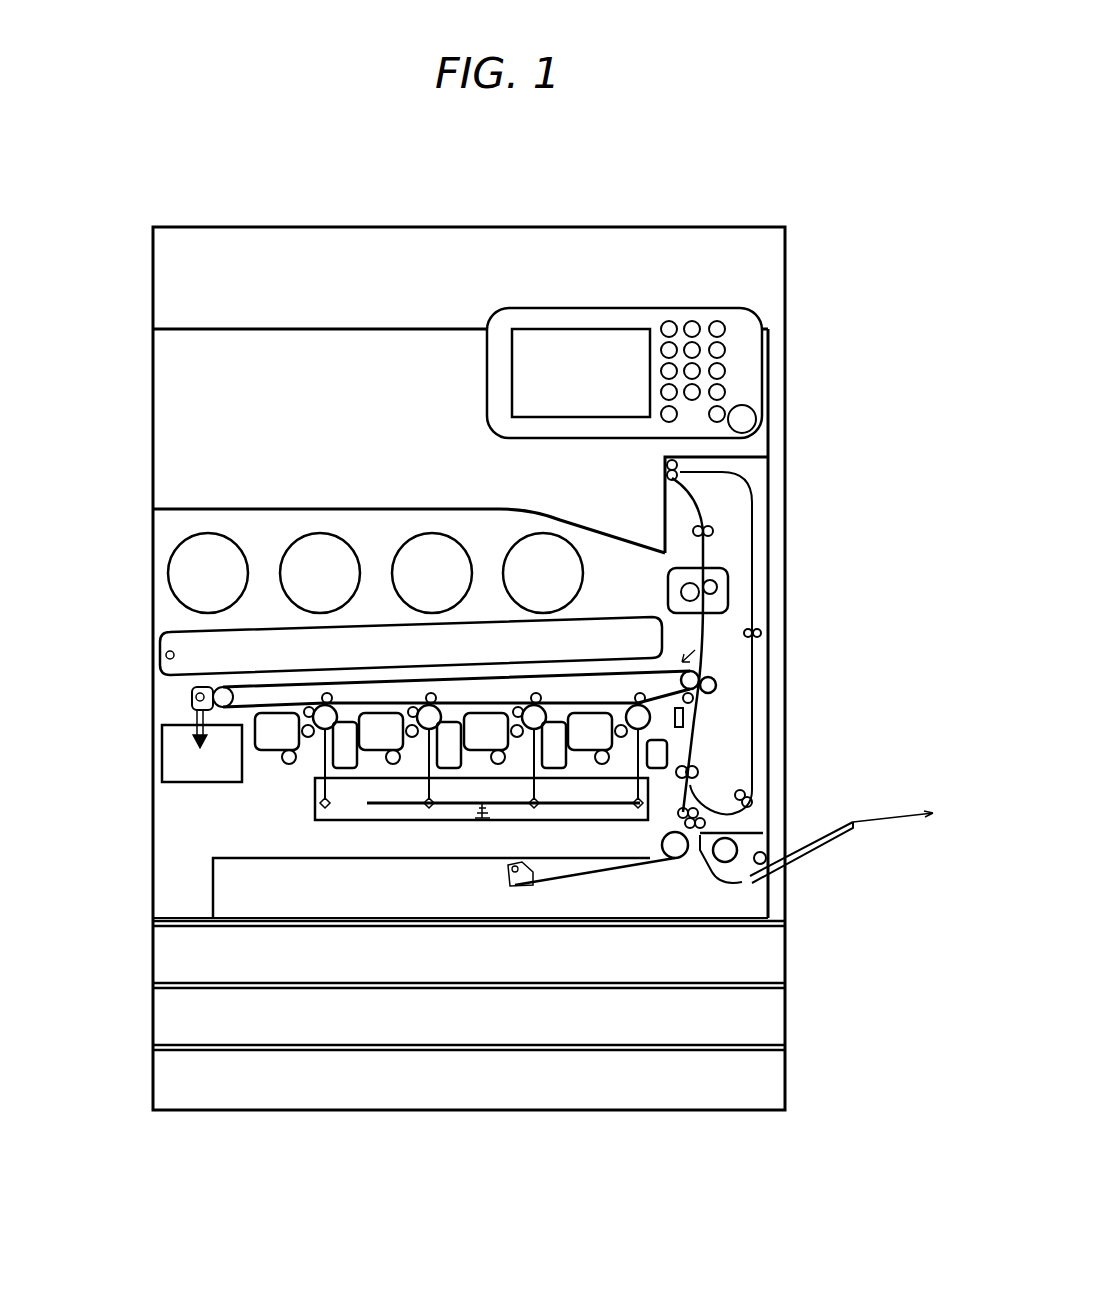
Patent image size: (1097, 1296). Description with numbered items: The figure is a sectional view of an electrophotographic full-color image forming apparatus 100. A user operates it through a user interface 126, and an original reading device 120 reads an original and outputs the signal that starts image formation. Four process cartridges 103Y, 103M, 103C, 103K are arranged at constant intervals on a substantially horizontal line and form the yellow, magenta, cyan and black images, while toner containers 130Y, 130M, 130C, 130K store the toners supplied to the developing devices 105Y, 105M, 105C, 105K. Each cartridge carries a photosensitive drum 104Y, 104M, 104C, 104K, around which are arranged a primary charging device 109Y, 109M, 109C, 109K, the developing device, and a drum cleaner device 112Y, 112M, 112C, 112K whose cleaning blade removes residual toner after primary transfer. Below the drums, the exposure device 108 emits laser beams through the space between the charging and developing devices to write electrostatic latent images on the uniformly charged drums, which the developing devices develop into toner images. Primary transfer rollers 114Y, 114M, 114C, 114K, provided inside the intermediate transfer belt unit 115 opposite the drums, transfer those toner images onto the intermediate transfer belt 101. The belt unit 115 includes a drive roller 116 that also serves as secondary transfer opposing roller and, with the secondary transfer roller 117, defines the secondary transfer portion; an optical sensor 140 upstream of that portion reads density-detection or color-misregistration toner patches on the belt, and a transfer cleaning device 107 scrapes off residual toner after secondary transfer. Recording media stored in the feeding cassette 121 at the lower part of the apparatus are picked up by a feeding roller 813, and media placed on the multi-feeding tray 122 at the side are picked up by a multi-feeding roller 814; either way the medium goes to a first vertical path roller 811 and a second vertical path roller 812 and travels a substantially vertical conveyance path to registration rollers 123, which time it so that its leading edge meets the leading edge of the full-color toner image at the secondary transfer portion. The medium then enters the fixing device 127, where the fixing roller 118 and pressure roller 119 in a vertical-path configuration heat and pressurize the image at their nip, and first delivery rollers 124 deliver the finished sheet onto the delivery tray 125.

The image forming apparatus 100 is at (476, 205).
The intermediate transfer belt 101 is at (505, 677).
The process cartridge 103Y is at (318, 772).
The process cartridge 103M is at (420, 735).
The process cartridge 103C is at (530, 770).
The process cartridge 103K is at (638, 770).
The photosensitive drum 104Y is at (298, 708).
The photosensitive drum 104M is at (380, 713).
The photosensitive drum 104C is at (486, 713).
The photosensitive drum 104K is at (612, 742).
The developing device 105Y is at (252, 733).
The developing device 105M is at (375, 762).
The developing device 105C is at (497, 765).
The developing device 105K is at (600, 765).
The transfer cleaning device 107 is at (192, 698).
The exposure device 108 is at (335, 800).
The primary charging device 109Y is at (315, 767).
The primary charging device 109M is at (405, 785).
The primary charging device 109C is at (510, 790).
The primary charging device 109K is at (614, 790).
The drum cleaner device 112Y is at (327, 693).
The drum cleaner device 112M is at (433, 693).
The drum cleaner device 112C is at (541, 698).
The drum cleaner device 112K is at (648, 702).
The primary transfer roller 114Y is at (304, 710).
The primary transfer roller 114M is at (410, 708).
The primary transfer roller 114C is at (523, 708).
The primary transfer roller 114K is at (676, 705).
The intermediate transfer belt unit 115 is at (700, 660).
The drive roller 116 is at (716, 682).
The secondary transfer roller 117 is at (705, 695).
The fixing roller 118 is at (703, 568).
The pressure roller 119 is at (715, 587).
The original reading device 120 is at (756, 274).
The feeding cassette 121 is at (752, 888).
The multi-feeding tray 122 is at (830, 838).
The registration rollers 123 is at (700, 776).
The first delivery rollers 124 is at (678, 466).
The delivery tray 125 is at (370, 508).
The user interface 126 is at (752, 350).
The fixing device 127 is at (720, 607).
The toner container 130Y is at (208, 555).
The toner container 130M is at (320, 555).
The toner container 130C is at (430, 555).
The toner container 130K is at (543, 555).
The optical sensor 140 is at (692, 745).
The first vertical path roller 811 is at (705, 858).
The second vertical path roller 812 is at (893, 806).
The feeding roller 813 is at (663, 870).
The multi-feeding roller 814 is at (770, 860).